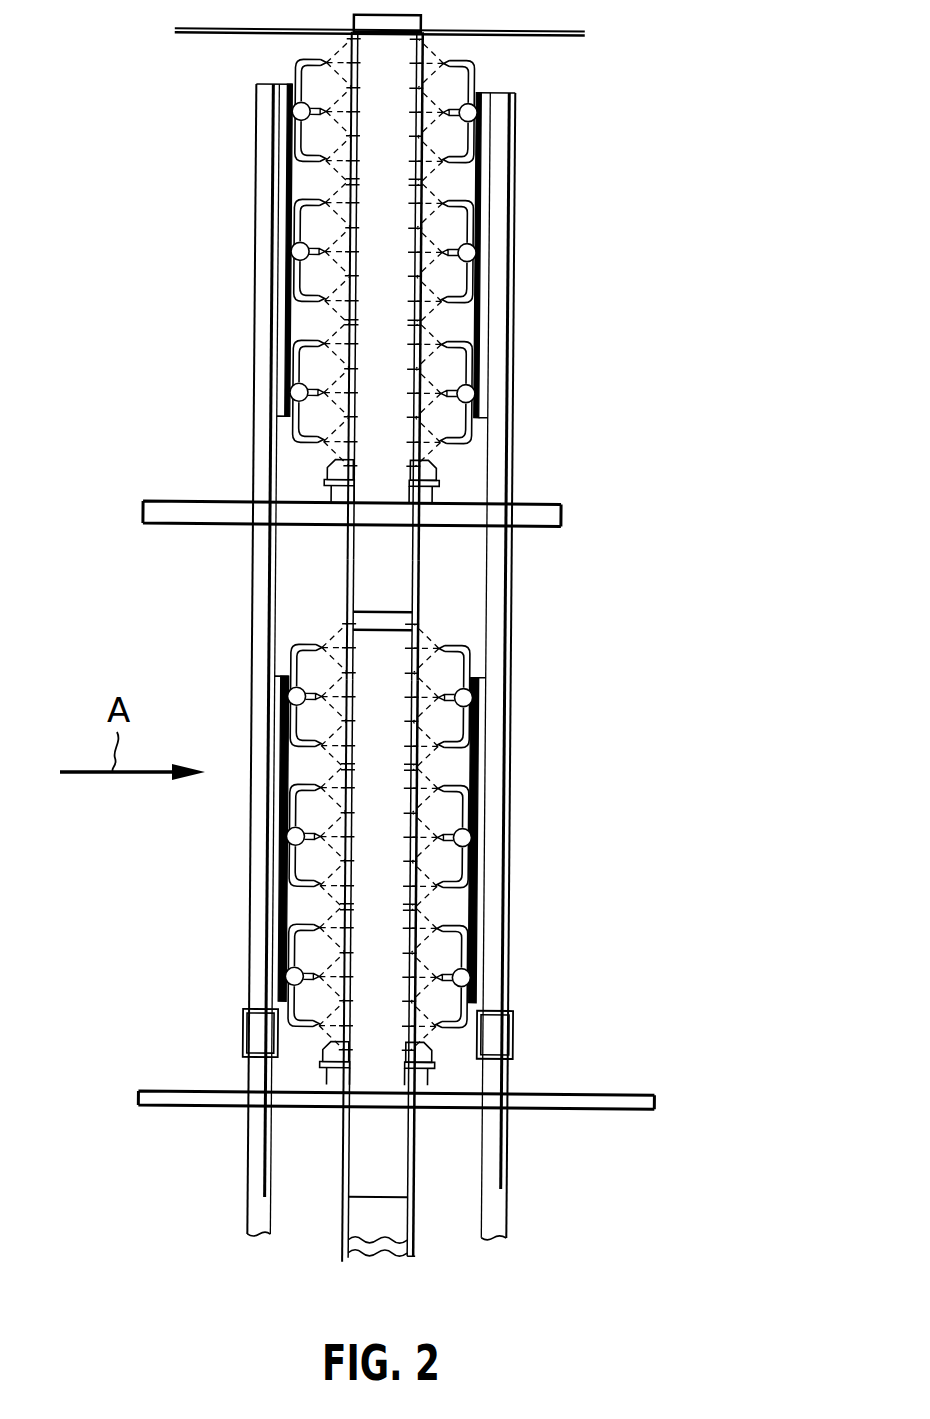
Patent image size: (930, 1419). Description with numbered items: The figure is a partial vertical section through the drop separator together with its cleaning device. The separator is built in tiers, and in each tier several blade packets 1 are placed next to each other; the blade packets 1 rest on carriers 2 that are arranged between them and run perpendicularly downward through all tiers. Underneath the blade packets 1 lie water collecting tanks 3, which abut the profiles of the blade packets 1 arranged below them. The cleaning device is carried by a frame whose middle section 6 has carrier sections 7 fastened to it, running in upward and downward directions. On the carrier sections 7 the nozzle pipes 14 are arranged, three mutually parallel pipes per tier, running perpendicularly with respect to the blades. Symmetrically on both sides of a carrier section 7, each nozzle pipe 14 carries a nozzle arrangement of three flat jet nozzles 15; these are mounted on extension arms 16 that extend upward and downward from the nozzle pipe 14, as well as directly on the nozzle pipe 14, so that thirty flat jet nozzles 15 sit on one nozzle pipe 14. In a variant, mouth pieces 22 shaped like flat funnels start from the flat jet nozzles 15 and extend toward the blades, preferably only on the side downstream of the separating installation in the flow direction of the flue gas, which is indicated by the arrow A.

The blade packet 1 is at (388, 181).
The carrier 2 is at (358, 1245).
The water collecting tank 3 is at (390, 582).
The middle section 6 is at (494, 1035).
The carrier section 7 is at (498, 243).
The nozzle pipe 14 is at (467, 688).
The flat jet nozzle 15 is at (467, 337).
The extension arm 16 is at (475, 433).
The mouth piece 22 is at (425, 884).